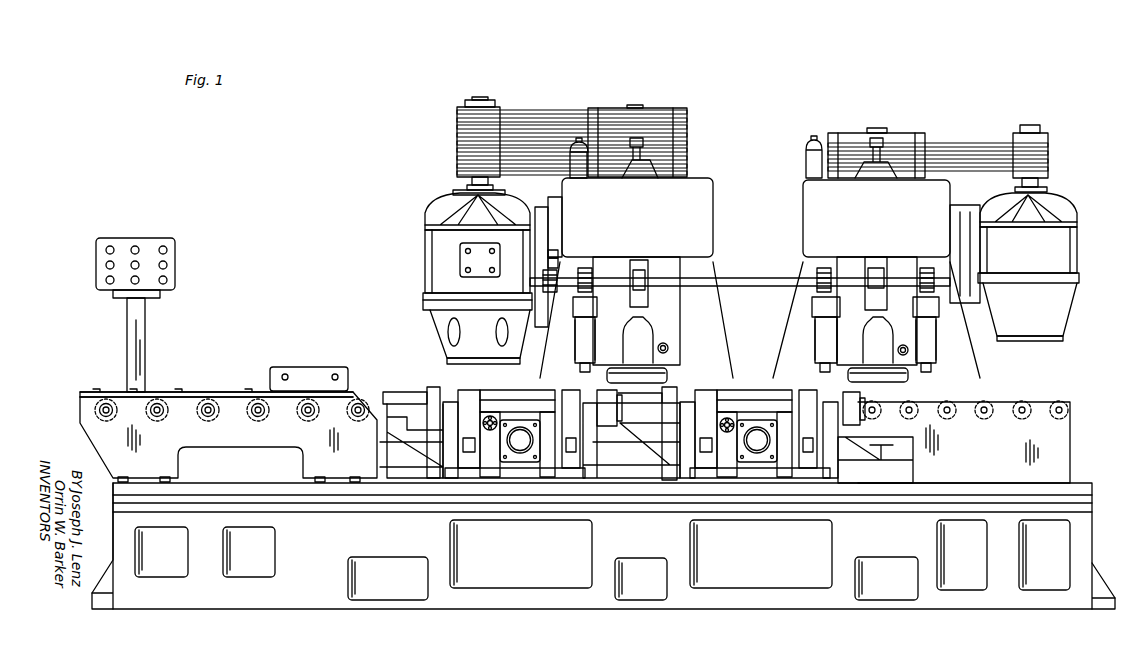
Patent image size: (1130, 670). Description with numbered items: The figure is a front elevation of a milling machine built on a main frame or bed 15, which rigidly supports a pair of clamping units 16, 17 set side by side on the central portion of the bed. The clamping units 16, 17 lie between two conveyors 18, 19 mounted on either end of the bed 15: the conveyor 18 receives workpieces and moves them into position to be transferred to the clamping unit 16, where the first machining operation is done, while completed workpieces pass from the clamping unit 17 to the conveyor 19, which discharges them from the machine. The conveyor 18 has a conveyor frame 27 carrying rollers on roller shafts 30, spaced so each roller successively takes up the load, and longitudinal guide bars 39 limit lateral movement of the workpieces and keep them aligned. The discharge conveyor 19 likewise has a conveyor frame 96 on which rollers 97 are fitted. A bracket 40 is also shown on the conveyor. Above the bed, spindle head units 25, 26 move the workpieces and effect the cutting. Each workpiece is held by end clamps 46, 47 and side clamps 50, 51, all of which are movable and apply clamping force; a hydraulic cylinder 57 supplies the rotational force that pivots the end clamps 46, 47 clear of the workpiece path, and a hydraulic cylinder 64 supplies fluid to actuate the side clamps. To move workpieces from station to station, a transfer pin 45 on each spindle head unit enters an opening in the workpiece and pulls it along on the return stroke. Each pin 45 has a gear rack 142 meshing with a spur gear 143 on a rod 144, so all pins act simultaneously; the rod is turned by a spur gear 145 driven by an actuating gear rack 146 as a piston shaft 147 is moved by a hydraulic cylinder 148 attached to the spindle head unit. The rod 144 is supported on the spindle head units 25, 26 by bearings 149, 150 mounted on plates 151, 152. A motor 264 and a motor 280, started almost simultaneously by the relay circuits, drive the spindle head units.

The main frame or bed 15 is at (308, 612).
The clamping unit 16 is at (398, 385).
The clamping unit 17 is at (782, 390).
The conveyor 18 is at (112, 385).
The conveyor 19 is at (1050, 458).
The spindle head unit 25 is at (684, 197).
The spindle head unit 26 is at (817, 219).
The conveyor frame 27 is at (95, 440).
The roller shaft 30 is at (173, 406).
The longitudinal guide bar 39 is at (225, 393).
The bracket 40 is at (297, 383).
The transfer pin 45 is at (578, 370).
The end clamp 46 is at (433, 386).
The end clamp 47 is at (868, 384).
The side clamp 50 is at (468, 392).
The side clamp 51 is at (552, 418).
The hydraulic cylinder 57 is at (489, 431).
The hydraulic cylinder 64 is at (519, 447).
The conveyor frame 96 is at (1033, 423).
The roller 97 is at (1020, 401).
The gear rack 142 is at (592, 284).
The spur gear 143 is at (586, 268).
The rod 144 is at (743, 278).
The spur gear 145 is at (543, 279).
The actuating gear rack 146 is at (548, 266).
The piston shaft 147 is at (582, 267).
The hydraulic cylinder 148 is at (550, 253).
The bearing 149 is at (642, 262).
The bearing 150 is at (876, 258).
The plate 151 is at (640, 300).
The plate 152 is at (878, 312).
The motor 264 is at (425, 258).
The motor 280 is at (1067, 198).